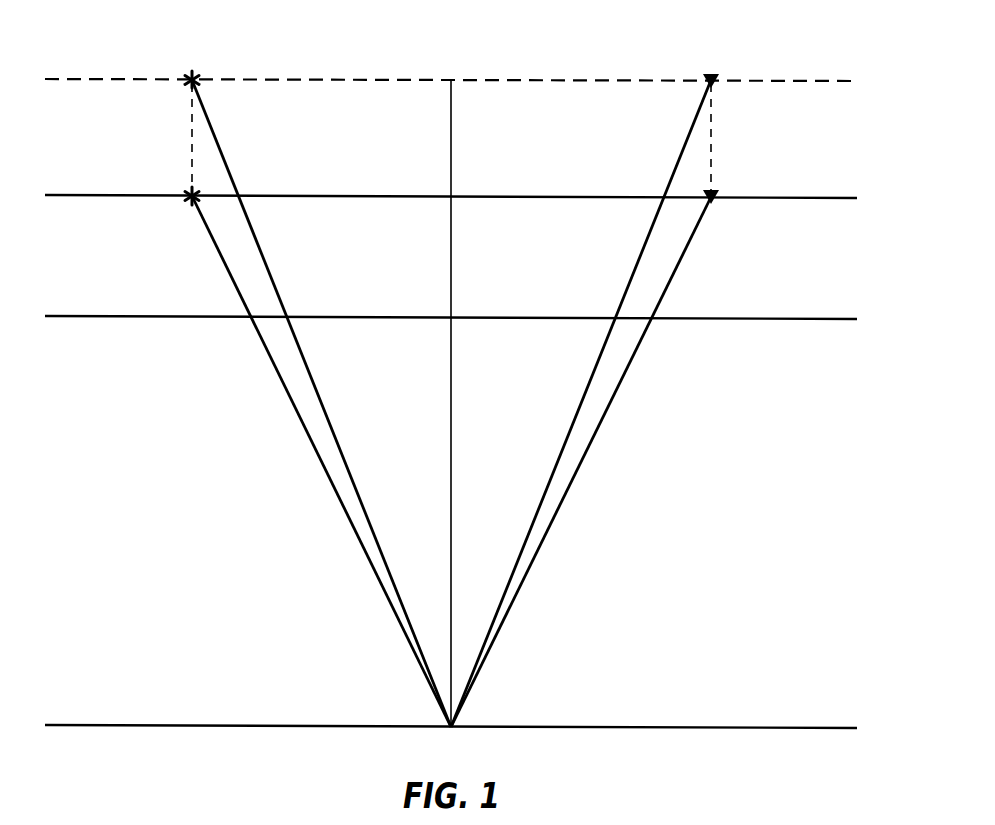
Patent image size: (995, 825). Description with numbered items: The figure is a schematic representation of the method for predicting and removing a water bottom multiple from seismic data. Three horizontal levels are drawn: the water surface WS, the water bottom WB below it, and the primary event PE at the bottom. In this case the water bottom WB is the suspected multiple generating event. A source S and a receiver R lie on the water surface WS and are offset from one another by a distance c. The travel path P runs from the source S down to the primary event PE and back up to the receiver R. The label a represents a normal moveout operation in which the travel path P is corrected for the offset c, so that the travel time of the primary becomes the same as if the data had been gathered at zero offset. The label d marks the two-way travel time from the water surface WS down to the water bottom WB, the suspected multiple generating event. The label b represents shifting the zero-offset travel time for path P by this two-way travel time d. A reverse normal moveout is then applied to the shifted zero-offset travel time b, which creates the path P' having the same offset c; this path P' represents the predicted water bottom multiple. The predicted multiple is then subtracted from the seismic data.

The source S is at (180, 185).
The receiver R is at (721, 187).
The water surface WS is at (451, 195).
The water bottom WB is at (451, 318).
The primary event PE is at (451, 709).
The travel path P is at (451, 461).
The path P' is at (451, 403).
The normal moveout operation a is at (496, 714).
The shifted zero-offset travel time b is at (543, 716).
The offset distance c is at (204, 59).
The two-way travel time d is at (175, 198).